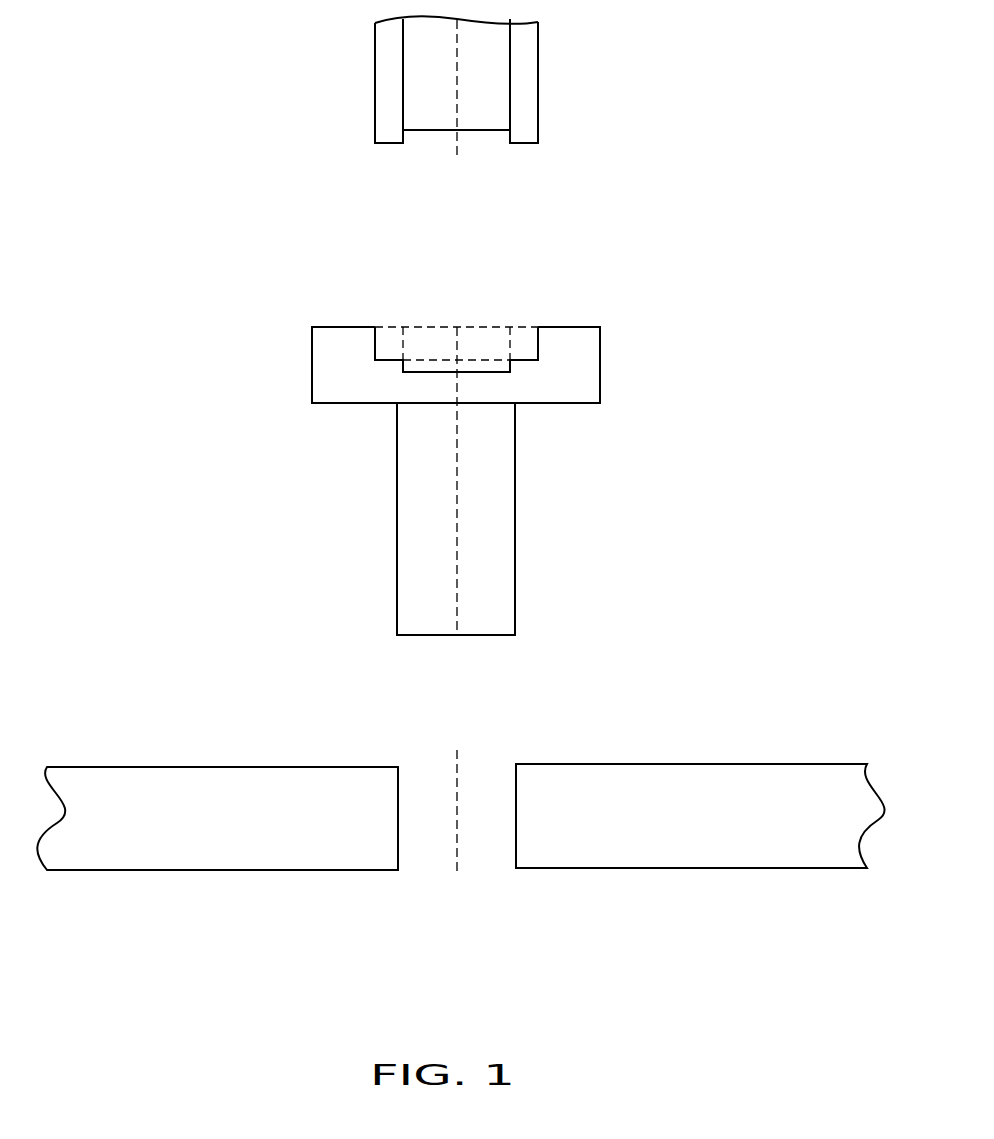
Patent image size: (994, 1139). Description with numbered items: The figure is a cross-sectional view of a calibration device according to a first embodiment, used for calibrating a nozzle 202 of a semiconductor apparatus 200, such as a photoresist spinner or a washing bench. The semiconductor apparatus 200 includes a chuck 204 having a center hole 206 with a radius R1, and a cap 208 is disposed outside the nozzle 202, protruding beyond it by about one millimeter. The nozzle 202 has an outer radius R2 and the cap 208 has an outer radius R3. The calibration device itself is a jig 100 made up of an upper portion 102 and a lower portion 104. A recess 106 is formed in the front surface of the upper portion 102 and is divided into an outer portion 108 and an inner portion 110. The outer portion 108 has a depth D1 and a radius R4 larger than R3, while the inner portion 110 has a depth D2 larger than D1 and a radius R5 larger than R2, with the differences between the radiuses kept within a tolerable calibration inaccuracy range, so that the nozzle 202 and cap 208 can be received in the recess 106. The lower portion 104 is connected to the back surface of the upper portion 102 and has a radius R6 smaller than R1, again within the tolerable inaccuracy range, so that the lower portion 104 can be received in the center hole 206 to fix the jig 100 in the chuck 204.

The jig 100 is at (533, 414).
The upper portion 102 is at (633, 325).
The lower portion 104 is at (633, 403).
The recess 106 is at (456, 283).
The outer portion 108 is at (393, 325).
The inner portion 110 is at (390, 242).
The semiconductor apparatus 200 is at (474, 823).
The nozzle 202 is at (490, 48).
The chuck 204 is at (823, 782).
The center hole 206 is at (496, 772).
The cap 208 is at (523, 77).
The radius of center hole R1 is at (448, 816).
The outer radius of nozzle R2 is at (448, 116).
The outer radius of cap R3 is at (448, 61).
The radius of outer portion R4 is at (403, 365).
The radius of inner portion R5 is at (400, 353).
The radius of lower portion R6 is at (448, 524).
The depth of outer portion D1 is at (528, 343).
The depth of inner portion D2 is at (482, 327).